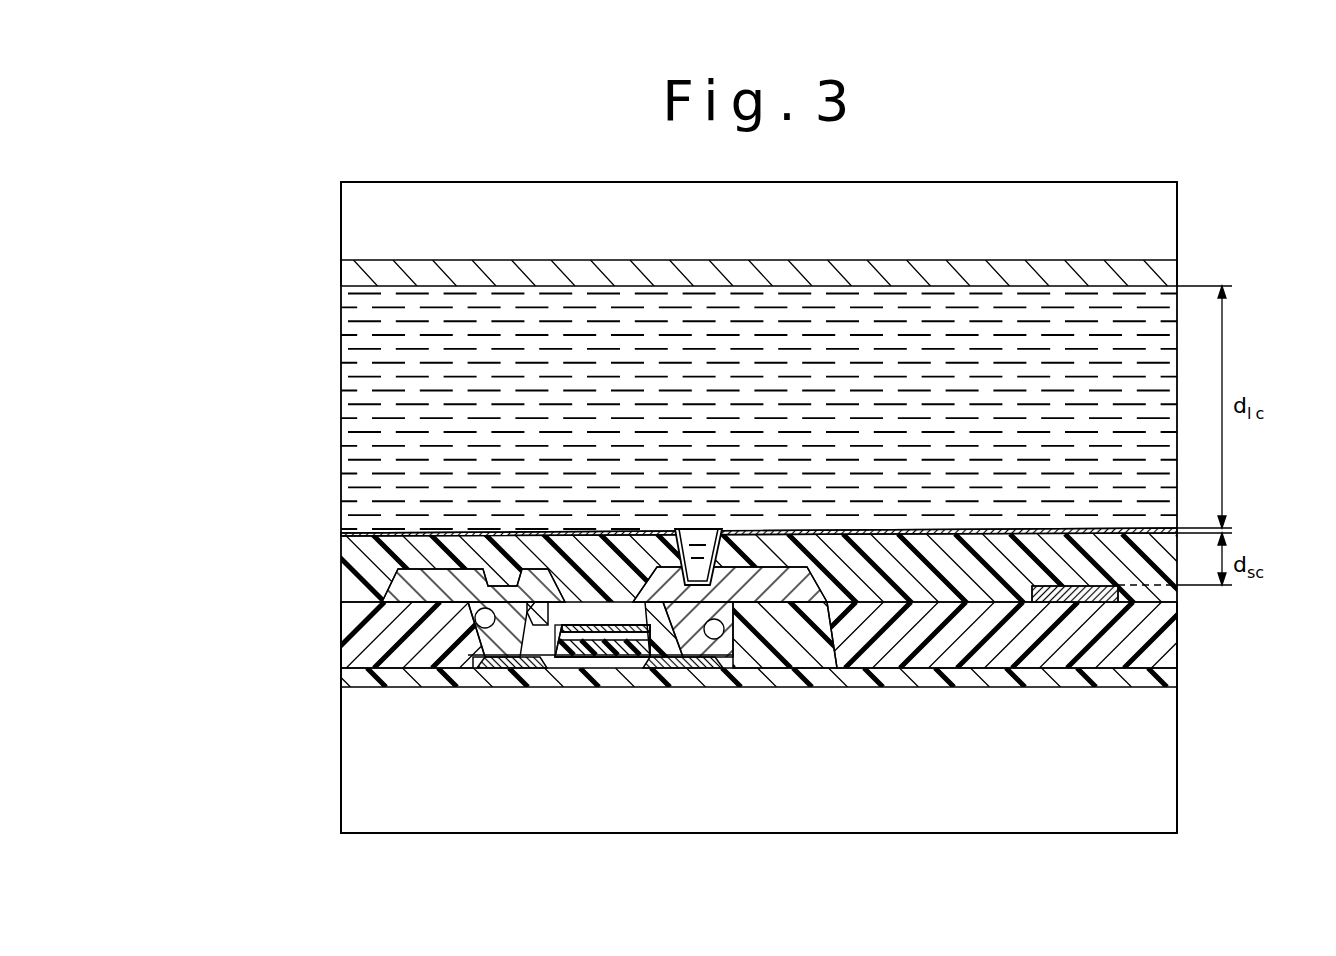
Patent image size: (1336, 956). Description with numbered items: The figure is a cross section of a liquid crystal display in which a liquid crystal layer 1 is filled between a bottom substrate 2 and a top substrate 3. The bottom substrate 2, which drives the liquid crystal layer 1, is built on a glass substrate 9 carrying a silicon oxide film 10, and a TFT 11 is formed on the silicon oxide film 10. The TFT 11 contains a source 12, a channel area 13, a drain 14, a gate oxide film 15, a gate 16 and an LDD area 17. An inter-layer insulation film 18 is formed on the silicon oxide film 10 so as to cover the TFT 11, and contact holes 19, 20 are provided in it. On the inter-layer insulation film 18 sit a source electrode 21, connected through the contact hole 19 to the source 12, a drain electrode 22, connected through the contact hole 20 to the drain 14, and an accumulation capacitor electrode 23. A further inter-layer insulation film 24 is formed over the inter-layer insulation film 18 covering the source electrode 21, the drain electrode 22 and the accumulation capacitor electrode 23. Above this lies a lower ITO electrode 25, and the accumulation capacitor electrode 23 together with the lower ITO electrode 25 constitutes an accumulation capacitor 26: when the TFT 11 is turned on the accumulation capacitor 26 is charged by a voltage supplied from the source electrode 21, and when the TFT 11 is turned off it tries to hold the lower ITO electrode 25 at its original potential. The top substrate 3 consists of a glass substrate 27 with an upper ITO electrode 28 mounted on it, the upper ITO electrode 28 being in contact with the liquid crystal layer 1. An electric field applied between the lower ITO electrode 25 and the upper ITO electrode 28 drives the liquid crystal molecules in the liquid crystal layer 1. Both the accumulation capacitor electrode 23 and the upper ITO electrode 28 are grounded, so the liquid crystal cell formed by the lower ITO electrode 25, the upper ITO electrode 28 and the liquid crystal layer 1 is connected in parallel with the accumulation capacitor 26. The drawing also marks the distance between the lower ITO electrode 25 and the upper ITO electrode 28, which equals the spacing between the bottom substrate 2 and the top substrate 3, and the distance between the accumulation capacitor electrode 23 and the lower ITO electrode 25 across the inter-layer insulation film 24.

The liquid crystal layer 1 is at (356, 348).
The bottom substrate 2 is at (241, 771).
The top substrate 3 is at (1172, 154).
The glass substrate 9 is at (1163, 752).
The silicon oxide film 10 is at (353, 680).
The TFT 11 is at (630, 720).
The source 12 is at (495, 665).
The channel area 13 is at (584, 660).
The drain 14 is at (698, 672).
The gate oxide film 15 is at (572, 645).
The gate 16 is at (598, 592).
The LDD area 17 is at (547, 660).
The inter-layer insulation film 18 is at (380, 630).
The contact hole 19 is at (477, 624).
The contact hole 20 is at (722, 643).
The source electrode 21 is at (385, 592).
The drain electrode 22 is at (792, 590).
The accumulation capacitor electrode 23 is at (1080, 590).
The inter-layer insulation film 24 is at (358, 562).
The lower ITO electrode 25 is at (928, 530).
The accumulation capacitor 26 is at (1180, 585).
The glass substrate 27 is at (1163, 222).
The upper ITO electrode 28 is at (1163, 273).